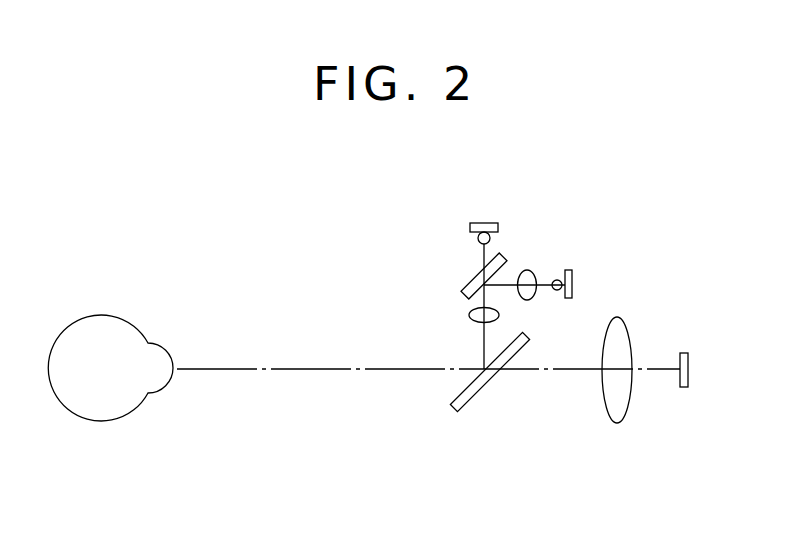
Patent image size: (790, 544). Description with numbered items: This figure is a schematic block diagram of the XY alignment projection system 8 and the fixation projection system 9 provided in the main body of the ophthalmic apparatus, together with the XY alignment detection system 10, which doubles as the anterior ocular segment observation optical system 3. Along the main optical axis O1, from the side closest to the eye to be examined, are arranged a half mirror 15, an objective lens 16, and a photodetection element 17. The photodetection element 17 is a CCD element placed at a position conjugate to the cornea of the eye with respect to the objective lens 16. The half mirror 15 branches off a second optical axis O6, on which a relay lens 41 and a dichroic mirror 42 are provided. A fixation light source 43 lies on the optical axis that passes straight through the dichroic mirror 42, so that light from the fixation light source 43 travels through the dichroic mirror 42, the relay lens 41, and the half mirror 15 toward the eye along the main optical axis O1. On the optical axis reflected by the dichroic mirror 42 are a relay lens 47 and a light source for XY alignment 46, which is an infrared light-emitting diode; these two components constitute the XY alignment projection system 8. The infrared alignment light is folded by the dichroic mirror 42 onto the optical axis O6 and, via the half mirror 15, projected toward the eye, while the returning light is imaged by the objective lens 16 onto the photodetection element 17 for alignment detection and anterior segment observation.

The main optical axis O1 is at (308, 369).
The optical axis O6 is at (484, 338).
The fixation light source 43 is at (485, 223).
The dichroic mirror 42 is at (500, 256).
The fixation projection system 9 is at (478, 256).
The relay lens 47 is at (527, 300).
The light source for XY alignment 46 is at (575, 278).
The XY alignment projection system 8 is at (555, 258).
The relay lens 41 is at (470, 314).
The half mirror 15 is at (457, 412).
The XY alignment detection system 10 is at (570, 362).
The objective lens 16 is at (603, 407).
The anterior ocular segment observation optical system 3 is at (643, 388).
The photodetection element 17 is at (685, 387).